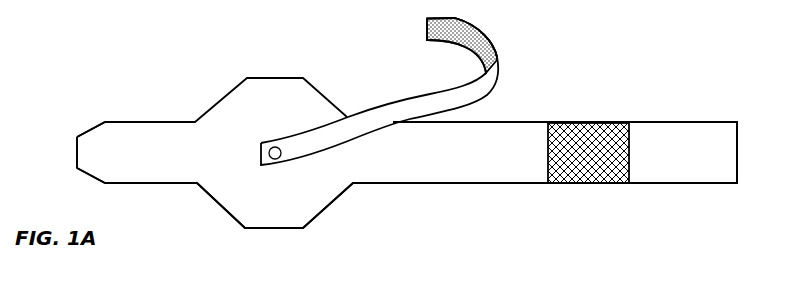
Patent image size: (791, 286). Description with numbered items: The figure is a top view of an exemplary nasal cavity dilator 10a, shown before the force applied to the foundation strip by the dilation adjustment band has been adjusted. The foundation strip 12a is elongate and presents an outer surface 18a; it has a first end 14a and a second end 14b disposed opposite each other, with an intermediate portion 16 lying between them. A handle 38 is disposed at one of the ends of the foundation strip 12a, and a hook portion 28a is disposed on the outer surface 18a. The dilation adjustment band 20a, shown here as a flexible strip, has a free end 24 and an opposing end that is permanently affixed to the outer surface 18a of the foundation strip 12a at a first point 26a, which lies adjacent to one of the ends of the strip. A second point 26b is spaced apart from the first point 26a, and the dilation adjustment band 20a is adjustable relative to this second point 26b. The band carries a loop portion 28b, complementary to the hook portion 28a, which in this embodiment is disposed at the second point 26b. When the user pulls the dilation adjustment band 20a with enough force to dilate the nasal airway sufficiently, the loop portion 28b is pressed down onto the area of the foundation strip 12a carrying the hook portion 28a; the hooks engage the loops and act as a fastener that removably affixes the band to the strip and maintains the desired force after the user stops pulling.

The nasal cavity dilator 10a is at (493, 193).
The foundation strip 12a is at (638, 183).
The first end 14a is at (217, 202).
The second end 14b is at (740, 153).
The intermediate portion 16 is at (535, 128).
The outer surface 18a is at (540, 183).
The dilation adjustment band 20a is at (378, 105).
The free end 24 is at (425, 33).
The first point 26a is at (275, 147).
The second point 26b is at (600, 183).
The hook portion 28a is at (515, 143).
The loop portion 28b is at (493, 46).
The handle 38 is at (93, 128).